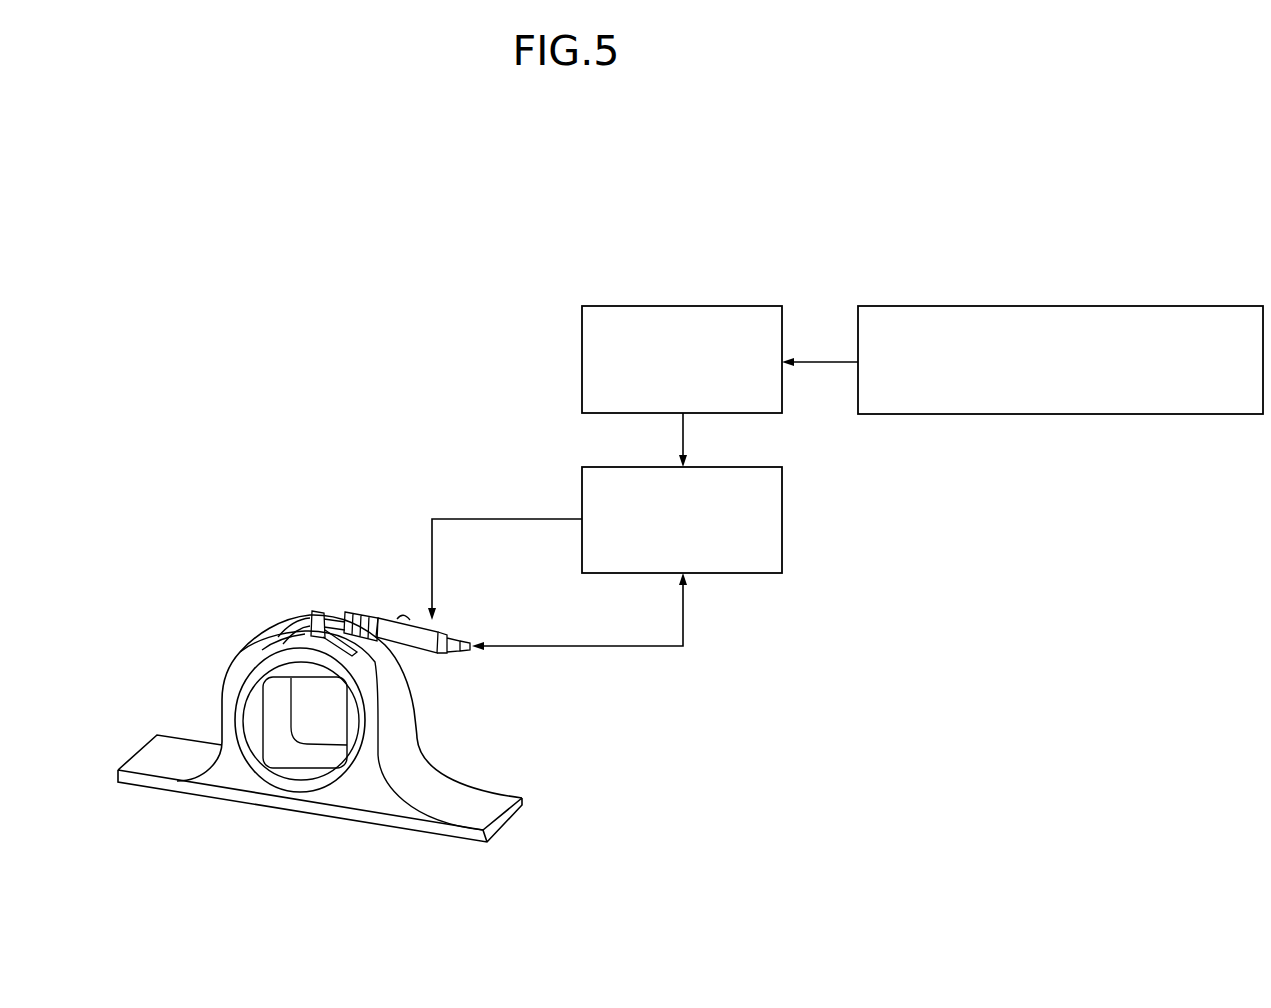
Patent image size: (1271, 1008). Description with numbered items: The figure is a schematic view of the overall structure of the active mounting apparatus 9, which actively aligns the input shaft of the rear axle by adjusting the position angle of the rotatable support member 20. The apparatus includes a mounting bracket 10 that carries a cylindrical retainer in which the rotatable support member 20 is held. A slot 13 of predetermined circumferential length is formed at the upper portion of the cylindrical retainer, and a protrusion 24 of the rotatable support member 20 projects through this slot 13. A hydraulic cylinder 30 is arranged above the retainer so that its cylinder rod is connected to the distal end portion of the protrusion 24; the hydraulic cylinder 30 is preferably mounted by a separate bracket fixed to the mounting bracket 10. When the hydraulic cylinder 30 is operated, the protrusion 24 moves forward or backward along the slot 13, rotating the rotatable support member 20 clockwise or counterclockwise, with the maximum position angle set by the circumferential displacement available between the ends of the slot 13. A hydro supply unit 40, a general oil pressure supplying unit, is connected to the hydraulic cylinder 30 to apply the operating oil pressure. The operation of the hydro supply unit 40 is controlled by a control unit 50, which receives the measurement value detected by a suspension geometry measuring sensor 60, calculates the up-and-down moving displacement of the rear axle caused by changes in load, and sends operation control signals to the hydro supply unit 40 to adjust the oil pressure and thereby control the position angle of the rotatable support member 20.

The active mounting apparatus 9 is at (212, 682).
The mounting bracket 10 is at (238, 793).
The slot 13 is at (287, 627).
The rotatable support member 20 is at (312, 780).
The protrusion 24 is at (312, 610).
The hydraulic cylinder 30 is at (383, 610).
The hydro supply unit 40 is at (754, 574).
The control unit 50 is at (668, 306).
The suspension geometry measuring sensor 60 is at (1048, 306).